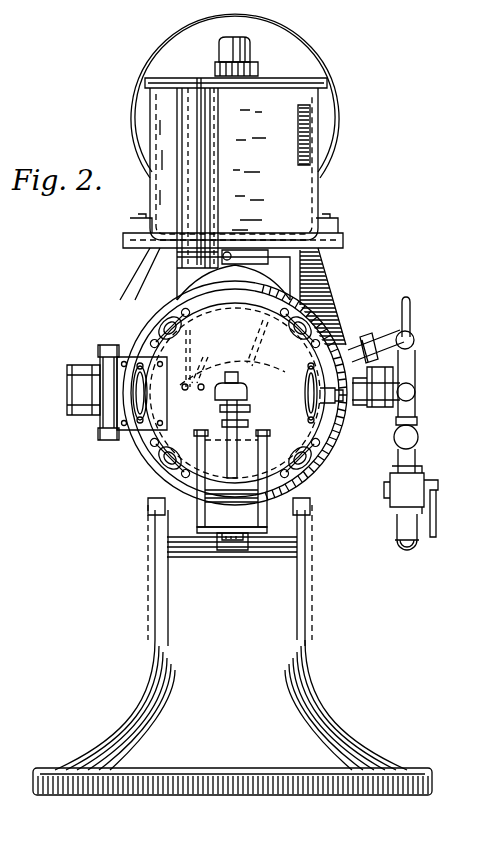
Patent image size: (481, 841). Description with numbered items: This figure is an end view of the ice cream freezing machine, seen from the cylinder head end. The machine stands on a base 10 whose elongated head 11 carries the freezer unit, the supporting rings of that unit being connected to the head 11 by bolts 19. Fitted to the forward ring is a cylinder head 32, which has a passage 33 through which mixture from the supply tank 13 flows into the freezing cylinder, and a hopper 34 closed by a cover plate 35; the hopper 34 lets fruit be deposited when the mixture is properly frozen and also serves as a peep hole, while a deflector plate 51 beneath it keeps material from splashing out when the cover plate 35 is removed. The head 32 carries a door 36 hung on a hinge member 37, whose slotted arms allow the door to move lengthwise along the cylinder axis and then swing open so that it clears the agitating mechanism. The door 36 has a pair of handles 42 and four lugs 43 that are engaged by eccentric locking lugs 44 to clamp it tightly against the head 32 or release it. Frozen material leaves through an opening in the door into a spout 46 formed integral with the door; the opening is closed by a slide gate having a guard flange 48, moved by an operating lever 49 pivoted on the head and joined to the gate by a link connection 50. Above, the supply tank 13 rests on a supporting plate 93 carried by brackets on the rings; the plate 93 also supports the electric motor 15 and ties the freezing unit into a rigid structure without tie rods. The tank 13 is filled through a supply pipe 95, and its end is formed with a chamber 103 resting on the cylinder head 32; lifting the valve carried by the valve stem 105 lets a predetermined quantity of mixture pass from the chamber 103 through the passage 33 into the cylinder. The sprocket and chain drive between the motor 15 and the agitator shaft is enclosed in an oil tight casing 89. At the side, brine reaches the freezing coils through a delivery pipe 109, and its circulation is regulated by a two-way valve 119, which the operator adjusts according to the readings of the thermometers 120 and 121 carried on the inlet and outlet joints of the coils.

The base 10 is at (330, 712).
The elongated head 11 is at (230, 575).
The supply tank 13 is at (322, 192).
The electric motor 15 is at (312, 60).
The bolts 19 is at (262, 548).
The cylinder head 32 is at (132, 453).
The passage 33 is at (192, 280).
The hopper 34 is at (300, 275).
The cover plate 35 is at (247, 262).
The door 36 is at (152, 505).
The hinge member 37 is at (123, 373).
The handles 42 is at (310, 393).
The lugs 43 is at (290, 340).
The eccentric locking lugs 44 is at (300, 306).
The spout 46 is at (262, 530).
The guard flange 48 is at (215, 522).
The operating lever 49 is at (240, 420).
The link connection 50 is at (210, 437).
The deflector plate 51 is at (205, 388).
The oil tight casing 89 is at (340, 330).
The supporting plate 93 is at (330, 245).
The supply pipe 95 is at (228, 53).
The chamber 103 is at (205, 150).
The valve stem 105 is at (200, 80).
The delivery pipe 109 is at (415, 372).
The two-way valve 119 is at (420, 480).
The thermometer 120 is at (412, 318).
The thermometer 121 is at (412, 355).